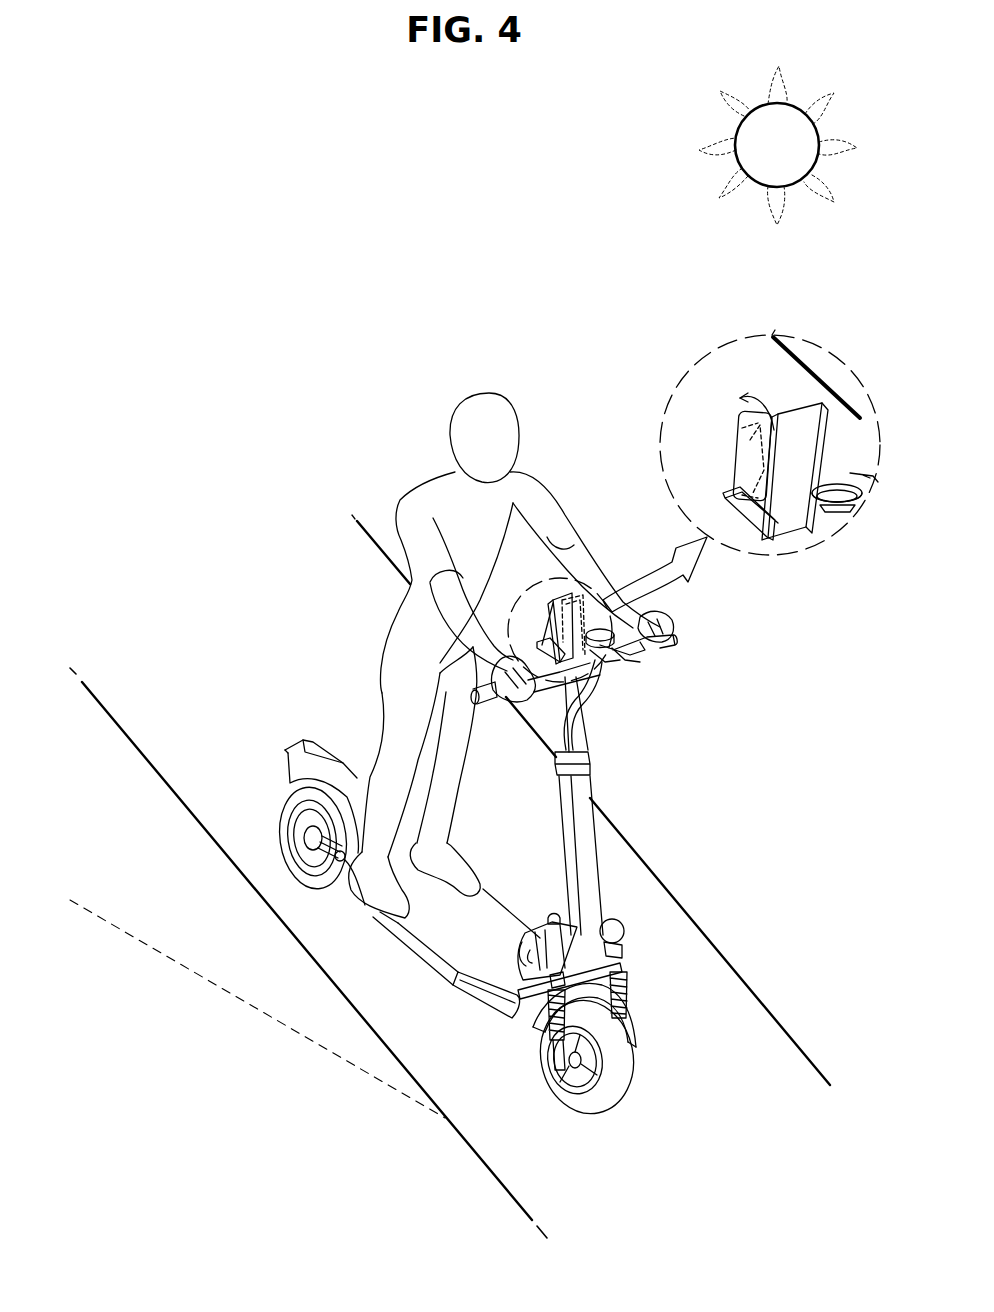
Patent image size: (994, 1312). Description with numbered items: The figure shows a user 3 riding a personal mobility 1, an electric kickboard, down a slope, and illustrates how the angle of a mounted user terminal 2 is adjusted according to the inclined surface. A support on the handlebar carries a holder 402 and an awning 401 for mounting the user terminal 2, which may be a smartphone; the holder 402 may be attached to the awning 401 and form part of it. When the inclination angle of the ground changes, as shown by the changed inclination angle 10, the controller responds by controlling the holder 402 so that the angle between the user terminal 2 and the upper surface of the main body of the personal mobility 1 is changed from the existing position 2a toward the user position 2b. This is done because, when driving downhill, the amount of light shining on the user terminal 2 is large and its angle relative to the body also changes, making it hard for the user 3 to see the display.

The personal mobility 1 is at (590, 872).
The user terminal 2 is at (548, 616).
The existing angle of the user terminal 2a is at (755, 458).
The adjusted angle toward the user 2b is at (737, 430).
The user 3 is at (511, 655).
The changed inclination angle 10 is at (373, 1033).
The awning 401 is at (808, 437).
The holder 402 is at (750, 522).